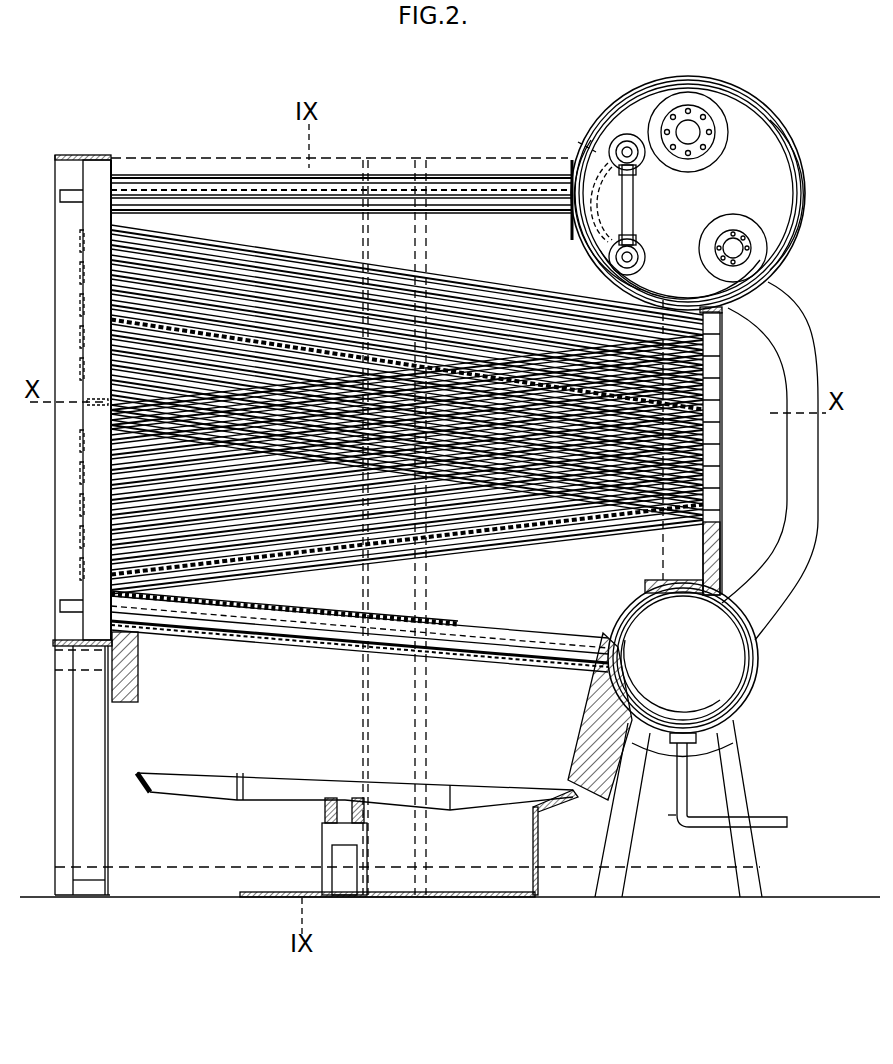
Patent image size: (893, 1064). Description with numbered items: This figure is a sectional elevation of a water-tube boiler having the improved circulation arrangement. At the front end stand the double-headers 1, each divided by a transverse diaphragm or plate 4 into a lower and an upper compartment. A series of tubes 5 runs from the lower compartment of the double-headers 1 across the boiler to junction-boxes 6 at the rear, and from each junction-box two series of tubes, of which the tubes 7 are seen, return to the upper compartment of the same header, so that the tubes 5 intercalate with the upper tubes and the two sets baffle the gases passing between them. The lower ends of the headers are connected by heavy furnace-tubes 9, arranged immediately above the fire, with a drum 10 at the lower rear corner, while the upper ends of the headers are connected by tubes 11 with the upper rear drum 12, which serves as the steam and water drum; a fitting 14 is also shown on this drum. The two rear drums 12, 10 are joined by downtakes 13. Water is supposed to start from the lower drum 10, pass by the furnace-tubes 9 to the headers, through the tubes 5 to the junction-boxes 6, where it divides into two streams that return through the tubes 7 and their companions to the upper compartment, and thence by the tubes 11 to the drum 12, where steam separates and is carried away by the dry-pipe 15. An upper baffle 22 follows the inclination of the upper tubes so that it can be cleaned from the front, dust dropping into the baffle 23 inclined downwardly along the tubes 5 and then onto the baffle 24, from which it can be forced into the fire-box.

The double-headers 1 is at (93, 348).
The diaphragm or plate 4 is at (100, 404).
The tubes 5 is at (313, 540).
The junction-boxes 6 is at (716, 374).
The tubes 7 is at (312, 292).
The furnace-tubes 9 is at (496, 650).
The drum 10 is at (691, 738).
The tubes 11 is at (513, 205).
The upper rear drum 12 is at (688, 193).
The downtakes 13 is at (797, 524).
The drum fitting 14 is at (740, 248).
The dry-pipe 15 is at (690, 130).
The upper baffle 22 is at (111, 315).
The baffle 23 is at (517, 522).
The baffle 24 is at (443, 608).